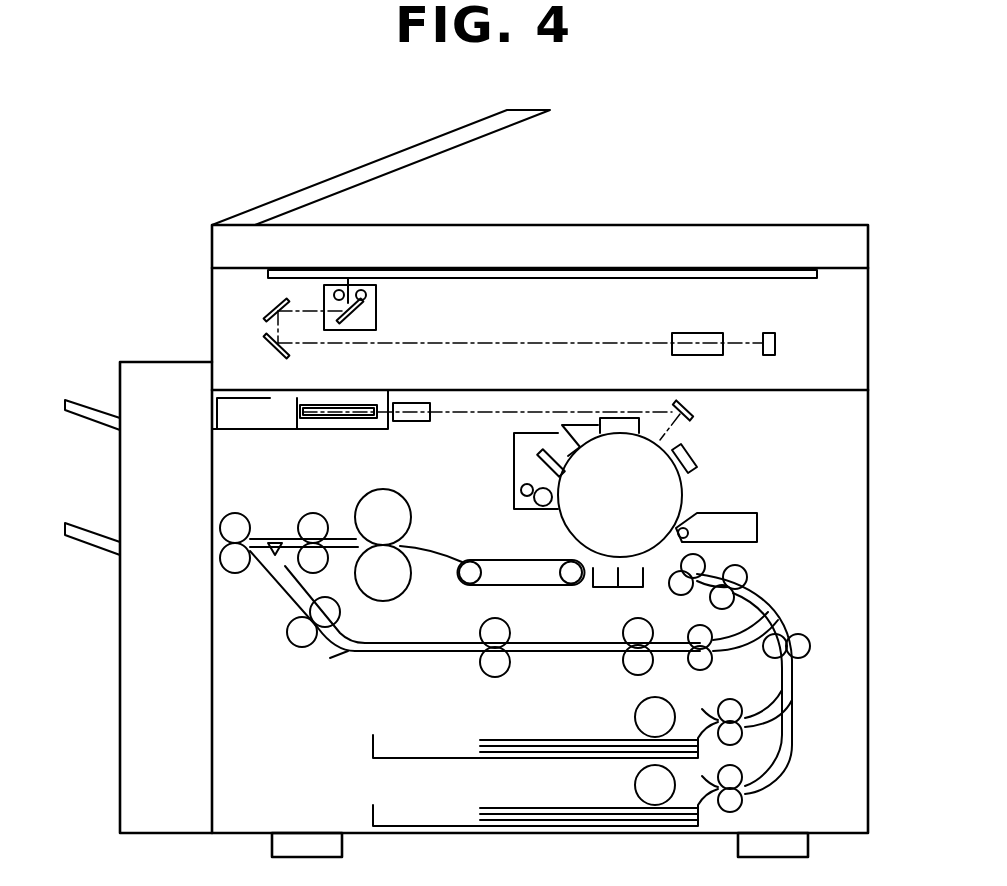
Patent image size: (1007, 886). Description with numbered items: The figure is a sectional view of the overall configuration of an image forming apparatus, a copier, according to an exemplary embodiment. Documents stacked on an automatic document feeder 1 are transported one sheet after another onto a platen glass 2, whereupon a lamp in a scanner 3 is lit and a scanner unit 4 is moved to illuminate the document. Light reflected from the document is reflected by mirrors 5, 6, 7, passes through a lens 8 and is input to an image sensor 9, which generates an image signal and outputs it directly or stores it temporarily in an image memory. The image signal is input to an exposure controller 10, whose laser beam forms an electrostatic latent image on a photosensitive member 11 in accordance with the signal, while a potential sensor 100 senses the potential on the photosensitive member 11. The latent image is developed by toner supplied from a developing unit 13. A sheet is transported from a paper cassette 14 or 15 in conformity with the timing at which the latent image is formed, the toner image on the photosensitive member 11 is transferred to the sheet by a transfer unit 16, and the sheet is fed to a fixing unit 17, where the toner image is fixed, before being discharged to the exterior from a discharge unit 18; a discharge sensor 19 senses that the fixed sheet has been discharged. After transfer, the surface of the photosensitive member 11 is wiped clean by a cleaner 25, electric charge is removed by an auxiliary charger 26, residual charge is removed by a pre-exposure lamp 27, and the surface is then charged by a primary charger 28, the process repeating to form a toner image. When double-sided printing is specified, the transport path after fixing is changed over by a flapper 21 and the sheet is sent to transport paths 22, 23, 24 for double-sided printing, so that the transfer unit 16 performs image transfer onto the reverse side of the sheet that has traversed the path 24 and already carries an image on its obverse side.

The automatic document feeder 1 is at (343, 175).
The platen glass 2 is at (762, 270).
The scanner 3 is at (376, 300).
The scanner unit 4 is at (365, 331).
The mirror 5 is at (362, 314).
The mirror 6 is at (274, 307).
The mirror 7 is at (273, 351).
The lens 8 is at (695, 333).
The image sensor 9 is at (767, 333).
The exposure controller 10 is at (283, 407).
The photosensitive member 11 is at (683, 491).
The developing unit 13 is at (757, 528).
The paper cassette 14 is at (373, 746).
The paper cassette 15 is at (373, 814).
The transfer unit 16 is at (607, 589).
The fixing unit 17 is at (386, 489).
The discharge unit 18 is at (220, 531).
The discharge sensor 19 is at (260, 532).
The flapper 21 is at (276, 541).
The transport path 22 is at (284, 598).
The transport path 23 is at (370, 651).
The transport path 24 is at (576, 652).
The cleaner 25 is at (514, 497).
The auxiliary charger 26 is at (558, 446).
The pre-exposure lamp 27 is at (586, 424).
The primary charger 28 is at (640, 418).
The potential sensor 100 is at (692, 460).